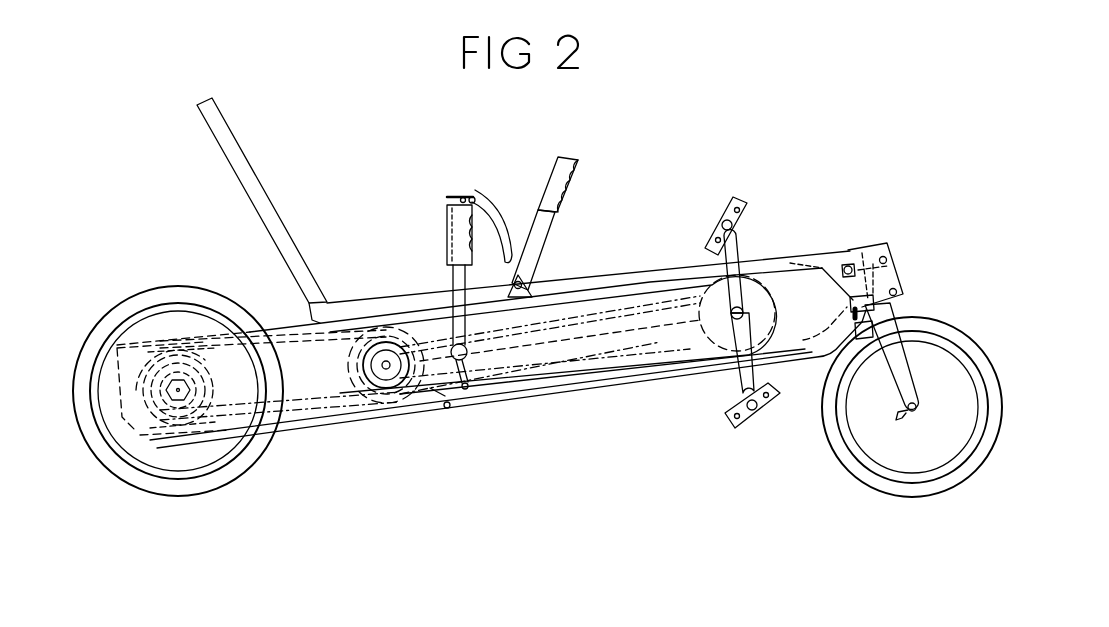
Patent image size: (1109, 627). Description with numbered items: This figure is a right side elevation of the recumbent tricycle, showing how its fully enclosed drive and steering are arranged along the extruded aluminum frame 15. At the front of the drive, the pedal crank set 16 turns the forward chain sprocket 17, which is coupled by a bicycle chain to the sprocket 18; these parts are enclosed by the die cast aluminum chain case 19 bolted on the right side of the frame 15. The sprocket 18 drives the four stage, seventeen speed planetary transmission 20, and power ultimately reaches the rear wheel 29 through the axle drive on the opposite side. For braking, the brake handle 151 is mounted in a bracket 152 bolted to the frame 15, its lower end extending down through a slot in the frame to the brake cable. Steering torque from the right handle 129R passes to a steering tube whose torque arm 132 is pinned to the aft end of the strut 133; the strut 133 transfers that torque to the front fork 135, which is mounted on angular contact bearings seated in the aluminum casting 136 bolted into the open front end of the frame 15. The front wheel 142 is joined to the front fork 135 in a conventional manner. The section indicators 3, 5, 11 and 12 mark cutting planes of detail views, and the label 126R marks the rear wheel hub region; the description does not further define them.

The section line 3- 3 is at (373, 287).
The section line 5- 5 is at (740, 246).
The section line 11- 11 is at (460, 300).
The section line 12- 12 is at (860, 245).
The extruded aluminum frame 15 is at (823, 250).
The pedal crank set 16 is at (733, 330).
The forward chain sprocket 17 is at (693, 353).
The sprocket 18 is at (372, 398).
The die cast aluminum chain case 19 is at (583, 283).
The four stage seventeen speed planetary transmission 20 is at (437, 392).
The rear wheel 29 is at (233, 480).
The rear hub 126R is at (178, 390).
The handle 129R is at (447, 203).
The torque arm 132 is at (447, 405).
The strut 133 is at (600, 373).
The front fork 135 is at (900, 307).
The aluminum casting 136 is at (885, 270).
The front wheel 142 is at (830, 440).
The brake handle 151 is at (573, 153).
The bracket 152 is at (532, 285).